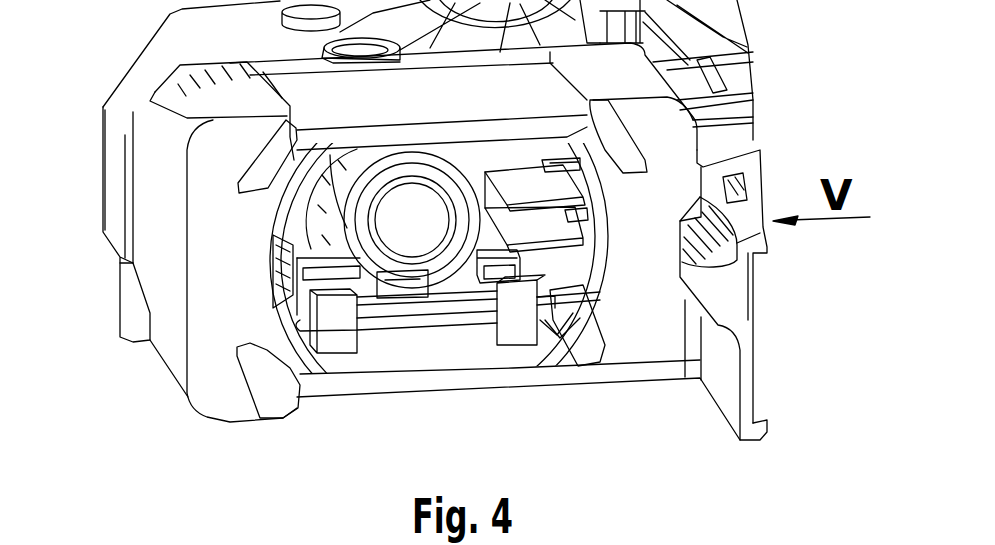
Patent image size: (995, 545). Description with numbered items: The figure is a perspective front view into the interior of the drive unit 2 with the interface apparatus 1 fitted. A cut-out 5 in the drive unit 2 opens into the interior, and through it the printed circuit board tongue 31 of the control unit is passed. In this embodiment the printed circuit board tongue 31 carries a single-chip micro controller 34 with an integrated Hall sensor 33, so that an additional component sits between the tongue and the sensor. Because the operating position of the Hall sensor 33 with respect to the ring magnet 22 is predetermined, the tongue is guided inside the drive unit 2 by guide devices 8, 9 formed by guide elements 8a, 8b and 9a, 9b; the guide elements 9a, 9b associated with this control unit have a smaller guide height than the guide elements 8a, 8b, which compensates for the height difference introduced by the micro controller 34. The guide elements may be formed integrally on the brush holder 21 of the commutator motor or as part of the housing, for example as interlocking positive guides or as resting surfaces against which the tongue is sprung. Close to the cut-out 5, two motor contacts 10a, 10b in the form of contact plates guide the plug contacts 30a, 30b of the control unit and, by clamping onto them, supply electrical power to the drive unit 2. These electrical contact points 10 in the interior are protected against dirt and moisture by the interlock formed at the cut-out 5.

The interface apparatus 1 is at (730, 200).
The drive unit 2 is at (153, 197).
The cut-out 5 is at (540, 313).
The guide device 8 is at (316, 279).
The guide element 8a is at (560, 325).
The guide element 8b is at (293, 270).
The guide device 9 is at (517, 348).
The guide element 9a is at (525, 330).
The guide element 9b is at (337, 333).
The electrical contact points 10 is at (490, 197).
The motor contact 10a is at (500, 180).
The motor contact 10b is at (545, 240).
The brush holder 21 is at (470, 353).
The ring magnet 22 is at (345, 229).
The plug contact 30a is at (550, 172).
The plug contact 30b is at (550, 215).
The printed circuit board tongue 31 is at (447, 325).
The Hall sensor 33 is at (420, 305).
The single-chip micro controller 34 is at (393, 300).